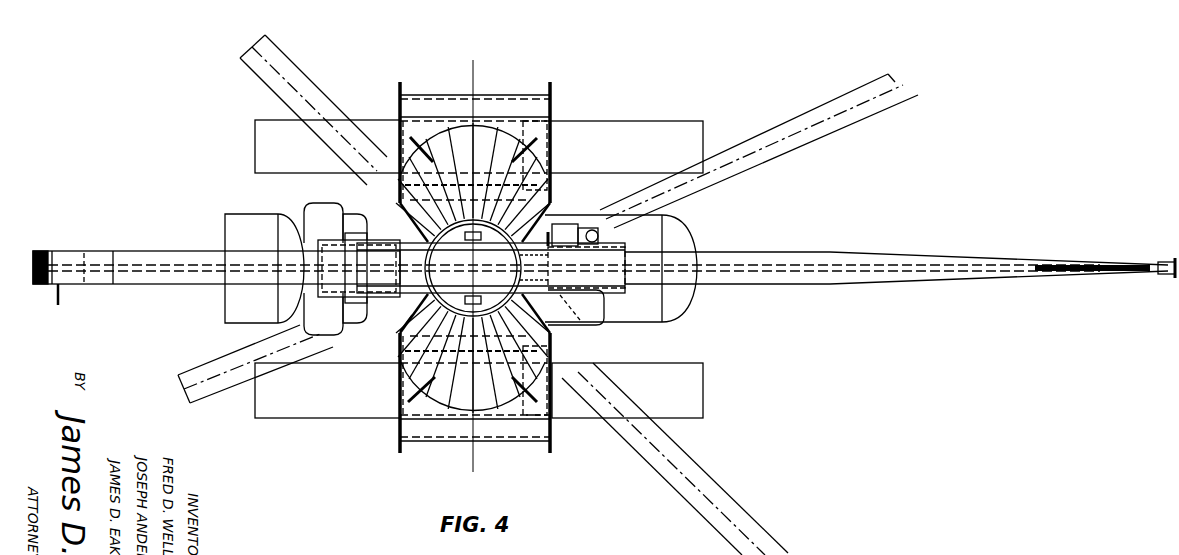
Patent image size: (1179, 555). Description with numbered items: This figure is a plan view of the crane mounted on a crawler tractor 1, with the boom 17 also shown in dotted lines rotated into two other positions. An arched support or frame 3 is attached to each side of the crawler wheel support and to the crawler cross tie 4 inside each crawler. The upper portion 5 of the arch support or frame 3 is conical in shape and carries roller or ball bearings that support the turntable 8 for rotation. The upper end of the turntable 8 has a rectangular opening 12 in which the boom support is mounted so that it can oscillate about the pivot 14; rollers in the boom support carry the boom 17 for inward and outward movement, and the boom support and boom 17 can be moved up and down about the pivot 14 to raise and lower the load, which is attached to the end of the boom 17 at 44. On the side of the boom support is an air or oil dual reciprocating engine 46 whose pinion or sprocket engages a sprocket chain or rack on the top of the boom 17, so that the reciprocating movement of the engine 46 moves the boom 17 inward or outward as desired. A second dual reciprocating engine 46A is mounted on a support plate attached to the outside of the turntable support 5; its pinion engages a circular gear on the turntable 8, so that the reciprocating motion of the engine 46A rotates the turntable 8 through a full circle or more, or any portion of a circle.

The crawler tractor 1 is at (688, 318).
The arched support or frame 3 is at (505, 97).
The crawler cross tie 4 is at (550, 121).
The upper portion of the arch support 5 is at (400, 331).
The turntable 8 is at (312, 240).
The opening 12 is at (358, 250).
The pivot 14 is at (357, 312).
The boom 17 is at (787, 120).
The end of the boom 44 is at (1159, 278).
The air or oil dual reciprocating engine 46 is at (560, 232).
The dual reciprocating engine 46A is at (575, 312).